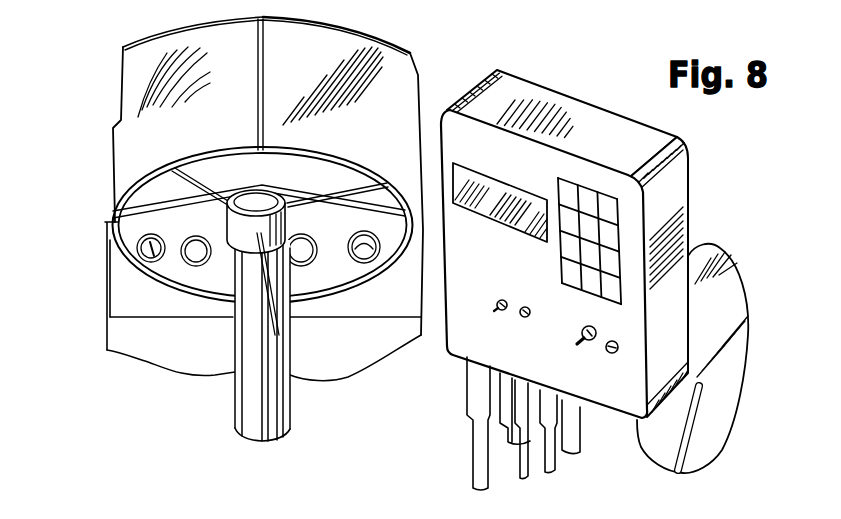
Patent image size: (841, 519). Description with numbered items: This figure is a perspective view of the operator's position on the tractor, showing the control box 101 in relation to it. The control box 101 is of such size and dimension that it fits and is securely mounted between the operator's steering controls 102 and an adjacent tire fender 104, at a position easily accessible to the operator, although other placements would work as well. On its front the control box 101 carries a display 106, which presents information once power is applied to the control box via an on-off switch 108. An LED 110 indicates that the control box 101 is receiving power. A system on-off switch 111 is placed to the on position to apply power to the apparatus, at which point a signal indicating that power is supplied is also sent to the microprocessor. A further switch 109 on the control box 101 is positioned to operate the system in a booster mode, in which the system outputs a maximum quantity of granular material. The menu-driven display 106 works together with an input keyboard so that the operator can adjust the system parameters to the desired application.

The control box 101 is at (665, 183).
The operator's steering controls 102 is at (112, 208).
The tire fender 104 is at (722, 248).
The display 106 is at (510, 183).
The on-off switch 108 is at (596, 331).
The switch 109 is at (521, 314).
The LED 110 is at (618, 349).
The system on-off switch 111 is at (498, 308).